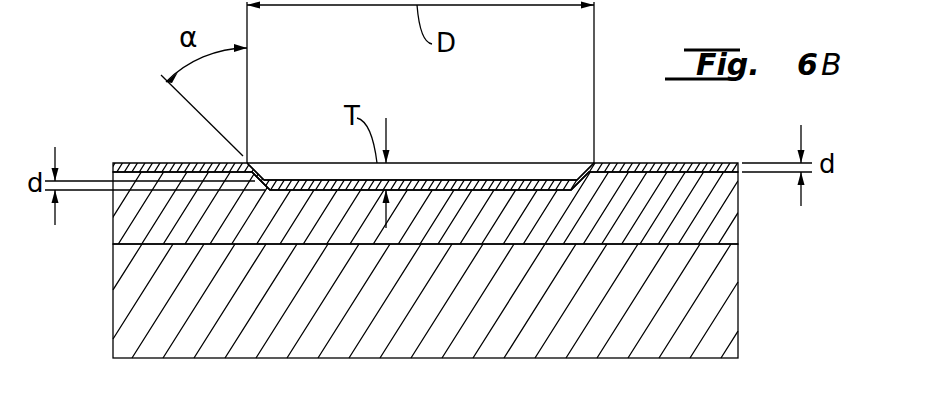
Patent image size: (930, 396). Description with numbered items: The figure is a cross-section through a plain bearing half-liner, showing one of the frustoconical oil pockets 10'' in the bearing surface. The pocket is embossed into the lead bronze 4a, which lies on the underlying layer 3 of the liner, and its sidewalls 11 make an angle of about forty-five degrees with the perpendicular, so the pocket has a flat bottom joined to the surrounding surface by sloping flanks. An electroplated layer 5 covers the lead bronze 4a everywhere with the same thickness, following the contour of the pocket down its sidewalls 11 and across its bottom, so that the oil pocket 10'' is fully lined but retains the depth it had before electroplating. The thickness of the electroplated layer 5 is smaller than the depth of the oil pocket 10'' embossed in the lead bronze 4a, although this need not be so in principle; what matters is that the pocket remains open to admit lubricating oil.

The substrate 3 is at (715, 303).
The lead bronze 4a is at (728, 224).
The electroplated layer 5 is at (687, 163).
The oil pockets 10'' is at (420, 144).
The sidewalls 11 is at (265, 163).